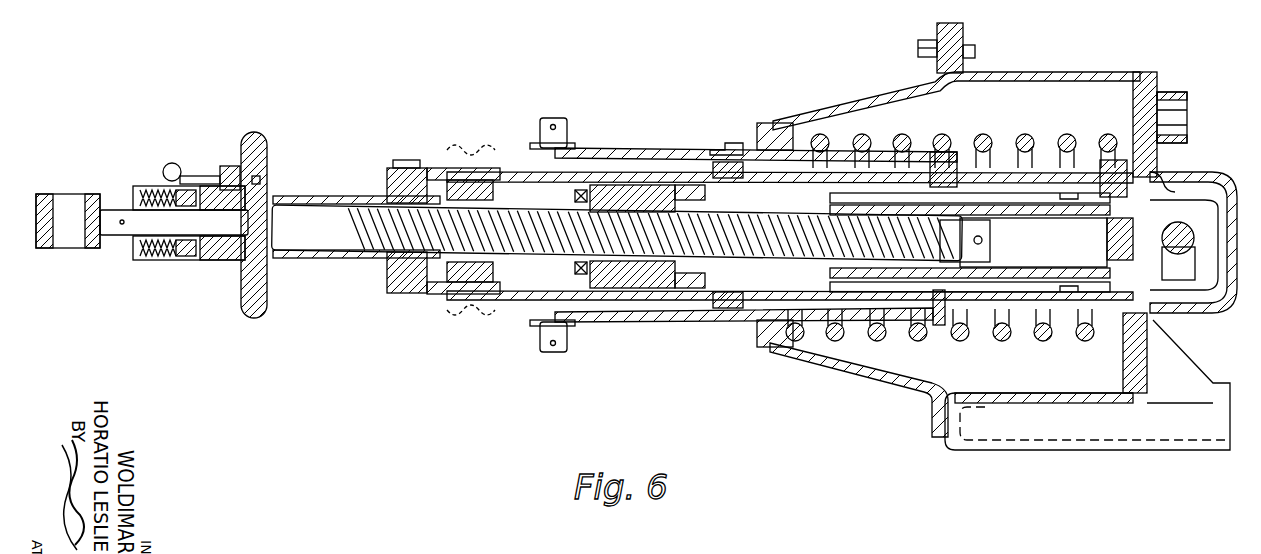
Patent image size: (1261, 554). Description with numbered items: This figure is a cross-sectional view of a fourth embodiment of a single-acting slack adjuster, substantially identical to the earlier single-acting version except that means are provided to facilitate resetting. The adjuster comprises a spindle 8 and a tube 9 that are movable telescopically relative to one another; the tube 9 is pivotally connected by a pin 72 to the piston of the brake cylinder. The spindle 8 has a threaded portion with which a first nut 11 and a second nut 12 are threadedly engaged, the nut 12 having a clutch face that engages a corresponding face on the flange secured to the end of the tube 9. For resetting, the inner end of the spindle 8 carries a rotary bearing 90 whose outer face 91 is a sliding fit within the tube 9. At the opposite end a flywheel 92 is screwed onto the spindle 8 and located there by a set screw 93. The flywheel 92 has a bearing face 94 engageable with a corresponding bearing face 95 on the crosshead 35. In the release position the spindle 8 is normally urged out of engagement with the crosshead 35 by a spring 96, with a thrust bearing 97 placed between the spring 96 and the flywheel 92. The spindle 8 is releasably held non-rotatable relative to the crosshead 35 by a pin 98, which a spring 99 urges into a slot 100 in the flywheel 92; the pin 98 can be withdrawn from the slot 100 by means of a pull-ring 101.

The crosshead 35 is at (92, 201).
The pull-ring 101 is at (165, 165).
The spring 99 is at (205, 170).
The pin 98 is at (224, 166).
The slot 100 is at (262, 180).
The bearing face 94 is at (243, 240).
The spring 96 is at (150, 257).
The thrust bearing 97 is at (190, 257).
The bearing face 95 is at (232, 261).
The set screw 93 is at (212, 262).
The flywheel 92 is at (258, 300).
The first nut 11 is at (470, 270).
The second nut 12 is at (578, 280).
The spindle 8 is at (697, 252).
The tube 9 is at (1008, 196).
The outer face 91 is at (988, 223).
The rotary bearing 90 is at (988, 258).
The pin 72 is at (1186, 228).